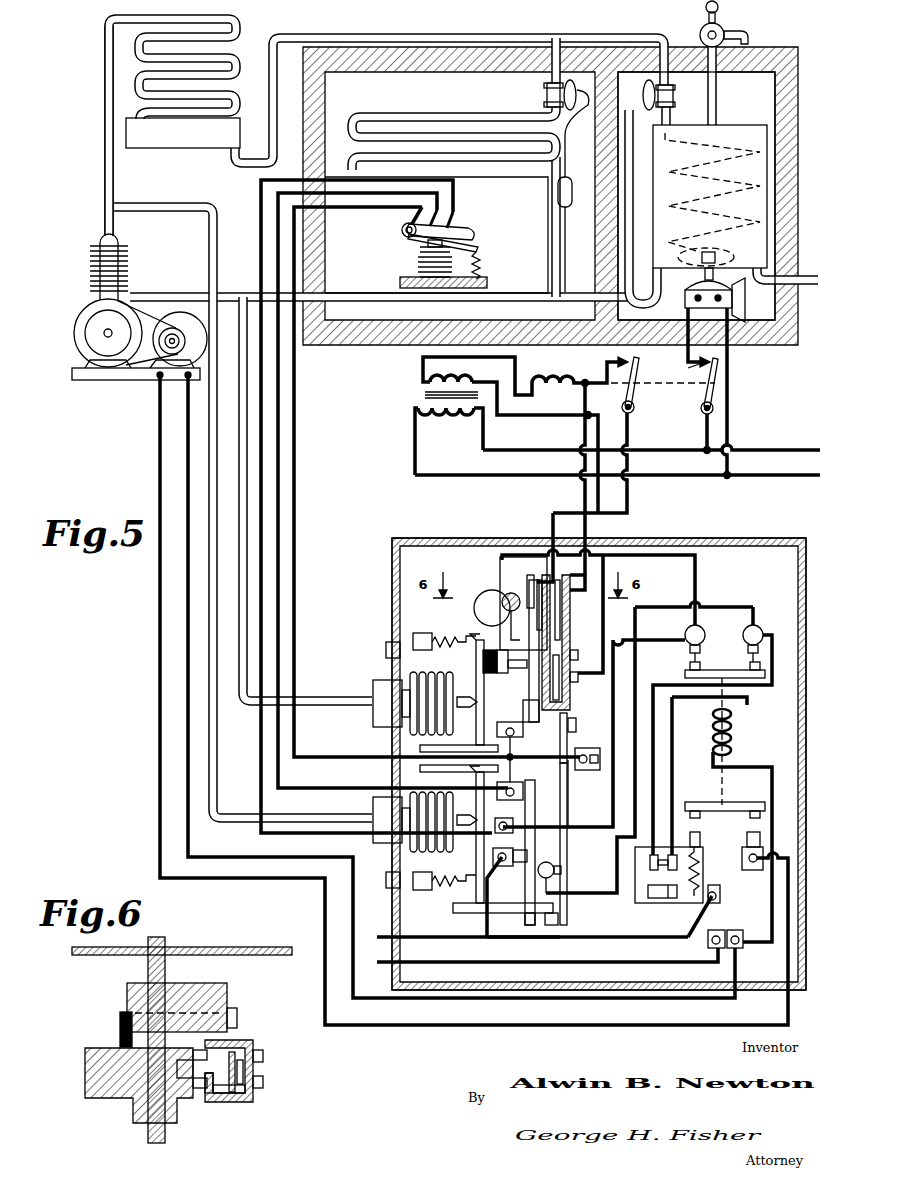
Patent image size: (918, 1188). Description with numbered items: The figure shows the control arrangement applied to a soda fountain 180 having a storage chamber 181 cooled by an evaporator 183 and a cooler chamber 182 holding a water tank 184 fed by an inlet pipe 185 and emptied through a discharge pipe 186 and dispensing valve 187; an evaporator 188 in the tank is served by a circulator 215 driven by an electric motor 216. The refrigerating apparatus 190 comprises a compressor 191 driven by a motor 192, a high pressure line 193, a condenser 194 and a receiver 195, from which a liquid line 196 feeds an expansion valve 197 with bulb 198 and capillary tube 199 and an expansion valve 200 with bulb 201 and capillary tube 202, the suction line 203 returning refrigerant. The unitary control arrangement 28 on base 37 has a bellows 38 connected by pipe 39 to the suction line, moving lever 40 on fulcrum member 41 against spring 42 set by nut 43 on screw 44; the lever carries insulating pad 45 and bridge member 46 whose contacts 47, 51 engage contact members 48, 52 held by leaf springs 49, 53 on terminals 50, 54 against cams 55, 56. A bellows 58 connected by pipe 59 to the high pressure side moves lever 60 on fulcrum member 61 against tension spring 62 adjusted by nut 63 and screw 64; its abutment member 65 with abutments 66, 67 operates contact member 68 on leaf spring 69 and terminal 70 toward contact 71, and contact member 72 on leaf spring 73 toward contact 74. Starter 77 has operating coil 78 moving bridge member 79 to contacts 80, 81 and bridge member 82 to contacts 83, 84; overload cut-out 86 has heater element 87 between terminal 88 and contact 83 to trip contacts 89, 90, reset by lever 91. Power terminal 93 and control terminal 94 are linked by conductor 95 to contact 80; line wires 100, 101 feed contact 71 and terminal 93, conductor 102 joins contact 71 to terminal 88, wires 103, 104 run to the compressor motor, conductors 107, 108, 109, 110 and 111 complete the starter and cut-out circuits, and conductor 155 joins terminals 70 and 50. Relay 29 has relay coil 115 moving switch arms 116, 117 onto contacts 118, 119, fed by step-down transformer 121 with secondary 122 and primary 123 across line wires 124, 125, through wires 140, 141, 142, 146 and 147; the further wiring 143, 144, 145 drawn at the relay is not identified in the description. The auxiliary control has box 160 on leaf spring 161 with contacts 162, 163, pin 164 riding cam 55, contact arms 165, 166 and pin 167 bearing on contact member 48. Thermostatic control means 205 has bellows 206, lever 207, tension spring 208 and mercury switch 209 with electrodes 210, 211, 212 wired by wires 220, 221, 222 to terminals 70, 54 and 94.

In FIG. 5, the unitary control arrangement 28 is at (364, 528).
In FIG. 5, the relay 29 is at (768, 372).
In FIG. 5, the base 37 is at (393, 557).
In FIG. 6, the base 37 is at (226, 947).
In FIG. 5, the bellows 38 is at (428, 672).
In FIG. 5, the pipe 39 is at (311, 701).
In FIG. 5, the lever 40 is at (476, 668).
In FIG. 5, the fulcrum member 41 is at (446, 745).
In FIG. 5, the spring 42 is at (441, 635).
In FIG. 5, the nut 43 is at (420, 633).
In FIG. 5, the screw 44 is at (385, 645).
In FIG. 5, the insulating pad 45 is at (485, 650).
In FIG. 6, the insulating pad 45 is at (119, 1025).
In FIG. 5, the bridge member 46 is at (500, 673).
In FIG. 5, the contact 47 is at (518, 670).
In FIG. 5, the contact member 48 is at (529, 690).
In FIG. 6, the contact member 48 is at (198, 1050).
In FIG. 5, the leaf spring 49 is at (523, 712).
In FIG. 5, the terminal 50 is at (521, 740).
In FIG. 5, the contact 51 is at (527, 645).
In FIG. 5, the contact member 52 is at (574, 721).
In FIG. 6, the contact member 52 is at (236, 1008).
In FIG. 5, the leaf spring 53 is at (578, 748).
In FIG. 5, the terminal 54 is at (591, 766).
In FIG. 5, the cam 55 is at (478, 590).
In FIG. 6, the cam 55 is at (86, 1073).
In FIG. 5, the cam 56 is at (505, 580).
In FIG. 6, the cam 56 is at (127, 996).
In FIG. 5, the bellows 58 is at (430, 852).
In FIG. 5, the pipe 59 is at (217, 812).
In FIG. 5, the lever 60 is at (475, 776).
In FIG. 5, the fulcrum member 61 is at (430, 771).
In FIG. 5, the tension spring 62 is at (445, 885).
In FIG. 5, the nut 63 is at (420, 885).
In FIG. 5, the screw 64 is at (386, 878).
In FIG. 5, the adjustable abutment member 65 is at (470, 910).
In FIG. 5, the abutment 66 is at (528, 915).
In FIG. 5, the abutment 67 is at (553, 915).
In FIG. 5, the contact member 68 is at (535, 885).
In FIG. 5, the leaf spring 69 is at (535, 806).
In FIG. 5, the terminal 70 is at (523, 788).
In FIG. 5, the contact 71 is at (505, 850).
In FIG. 5, the contact member 72 is at (567, 916).
In FIG. 5, the leaf spring 73 is at (570, 790).
In FIG. 5, the contact 74 is at (546, 862).
In FIG. 5, the starter or relay 77 is at (768, 592).
In FIG. 5, the operating coil 78 is at (731, 735).
In FIG. 5, the bridge member 79 is at (712, 670).
In FIG. 5, the contact 80 is at (697, 628).
In FIG. 5, the contact 81 is at (750, 628).
In FIG. 5, the bridge member 82 is at (730, 801).
In FIG. 5, the contact 83 is at (697, 836).
In FIG. 5, the contact 84 is at (748, 840).
In FIG. 5, the overload cut-out mechanism 86 is at (640, 905).
In FIG. 5, the heater element 87 is at (699, 868).
In FIG. 5, the terminal 88 is at (720, 895).
In FIG. 5, the contact 89 is at (652, 850).
In FIG. 5, the contact 90 is at (674, 850).
In FIG. 5, the reset lever 91 is at (668, 899).
In FIG. 5, the power terminal 93 is at (728, 930).
In FIG. 5, the control terminal 94 is at (502, 818).
In FIG. 5, the conductor 95 is at (583, 828).
In FIG. 5, the line wire 100 is at (390, 935).
In FIG. 5, the line wire 101 is at (390, 963).
In FIG. 5, the conductor 102 is at (548, 938).
In FIG. 5, the wire 103 is at (158, 411).
In FIG. 5, the wire 104 is at (185, 432).
In FIG. 5, the conductor 107 is at (617, 880).
In FIG. 5, the conductor 108 is at (766, 675).
In FIG. 5, the conductor 109 is at (748, 701).
In FIG. 5, the conductor 110 is at (765, 766).
In FIG. 5, the conductor 111 is at (696, 560).
In FIG. 5, the relay coil 115 is at (565, 372).
In FIG. 5, the switch arm 116 is at (635, 374).
In FIG. 5, the switch arm 117 is at (702, 403).
In FIG. 5, the contact 118 is at (606, 361).
In FIG. 5, the contact 119 is at (683, 370).
In FIG. 5, the step-down transformer 121 is at (405, 391).
In FIG. 5, the secondary 122 is at (446, 373).
In FIG. 5, the primary 123 is at (443, 419).
In FIG. 5, the line wire 124 is at (770, 450).
In FIG. 5, the line wire 125 is at (770, 475).
In FIG. 5, the wire 140 is at (548, 416).
In FIG. 5, the wire 141 is at (584, 490).
In FIG. 5, the wire 142 is at (420, 359).
In FIG. 5, the conductor 143 is at (706, 428).
In FIG. 5, the conductor 144 is at (688, 355).
In FIG. 5, the conductor 145 is at (729, 397).
In FIG. 5, the wire 146 is at (552, 515).
In FIG. 5, the wire 147 is at (592, 396).
In FIG. 5, the conductor 155 is at (513, 765).
In FIG. 5, the box 160 is at (571, 702).
In FIG. 6, the box 160 is at (254, 1100).
In FIG. 5, the leaf spring 161 is at (560, 718).
In FIG. 5, the contact 162 is at (573, 657).
In FIG. 6, the contact 162 is at (263, 1057).
In FIG. 5, the contact 163 is at (573, 680).
In FIG. 6, the contact 163 is at (263, 1082).
In FIG. 5, the pin 164 is at (528, 576).
In FIG. 6, the pin 164 is at (208, 1100).
In FIG. 5, the resilient contact arm 165 is at (560, 580).
In FIG. 6, the resilient contact arm 165 is at (244, 1060).
In FIG. 5, the resilient contact arm 166 is at (556, 695).
In FIG. 6, the resilient contact arm 166 is at (222, 1105).
In FIG. 5, the pin 167 is at (542, 580).
In FIG. 6, the pin 167 is at (236, 1050).
In FIG. 5, the soda fountain 180 is at (798, 88).
In FIG. 5, the storage chamber 181 is at (426, 96).
In FIG. 5, the water or beverage cooler chamber 182 is at (735, 98).
In FIG. 5, the evaporator 183 is at (480, 113).
In FIG. 5, the water tank 184 is at (738, 125).
In FIG. 5, the inlet pipe 185 is at (800, 279).
In FIG. 5, the discharge pipe 186 is at (708, 112).
In FIG. 5, the dispensing valve 187 is at (704, 28).
In FIG. 5, the evaporator 188 is at (730, 172).
In FIG. 5, the refrigerating apparatus 190 is at (148, 263).
In FIG. 5, the compressor 191 is at (99, 239).
In FIG. 5, the motor 192 is at (179, 323).
In FIG. 5, the high pressure line 193 is at (105, 133).
In FIG. 5, the condenser 194 is at (237, 44).
In FIG. 5, the receiver 195 is at (172, 141).
In FIG. 5, the liquid line 196 is at (346, 36).
In FIG. 5, the expansion valve 197 is at (547, 92).
In FIG. 5, the bulb 198 is at (569, 210).
In FIG. 5, the capillary tube 199 is at (566, 155).
In FIG. 5, the expansion valve 200 is at (674, 94).
In FIG. 5, the bulb 201 is at (648, 270).
In FIG. 5, the capillary tube 202 is at (644, 96).
In FIG. 5, the low pressure or suction line 203 is at (521, 299).
In FIG. 5, the thermostatic control means 205 is at (488, 216).
In FIG. 5, the bellows 206 is at (414, 260).
In FIG. 5, the lever 207 is at (479, 248).
In FIG. 5, the tension spring 208 is at (482, 262).
In FIG. 5, the mercury switch 209 is at (472, 233).
In FIG. 5, the electrode 210 is at (405, 226).
In FIG. 5, the electrode 211 is at (428, 204).
In FIG. 5, the electrode 212 is at (456, 213).
In FIG. 5, the circulator 215 is at (725, 254).
In FIG. 5, the electric motor 216 is at (688, 300).
In FIG. 5, the wire 220 is at (283, 787).
In FIG. 5, the wire 221 is at (298, 755).
In FIG. 5, the wire 222 is at (258, 832).